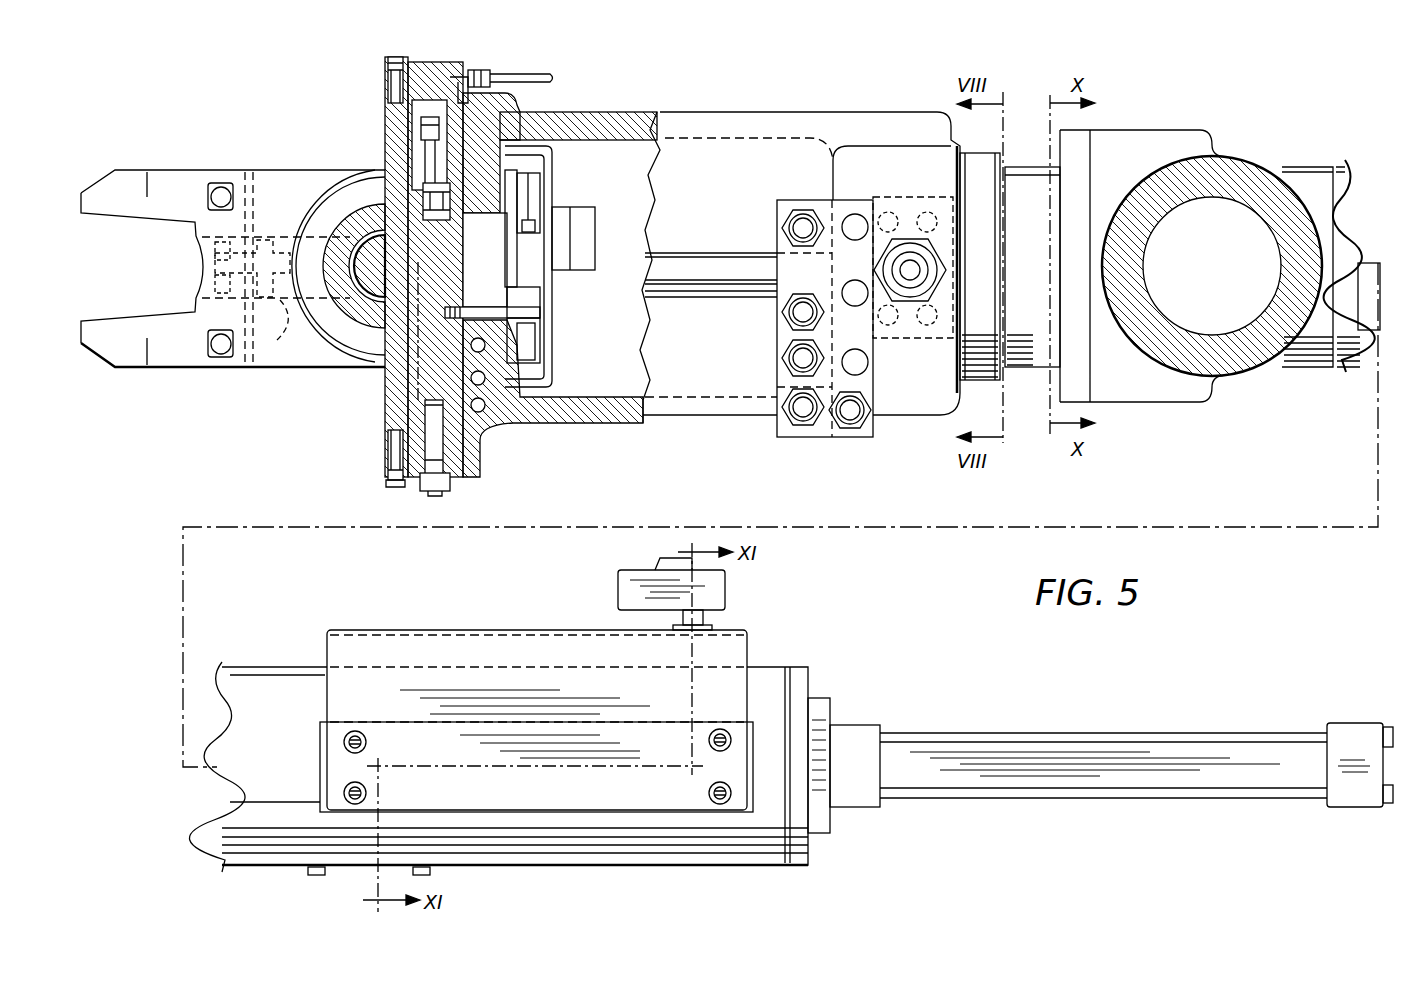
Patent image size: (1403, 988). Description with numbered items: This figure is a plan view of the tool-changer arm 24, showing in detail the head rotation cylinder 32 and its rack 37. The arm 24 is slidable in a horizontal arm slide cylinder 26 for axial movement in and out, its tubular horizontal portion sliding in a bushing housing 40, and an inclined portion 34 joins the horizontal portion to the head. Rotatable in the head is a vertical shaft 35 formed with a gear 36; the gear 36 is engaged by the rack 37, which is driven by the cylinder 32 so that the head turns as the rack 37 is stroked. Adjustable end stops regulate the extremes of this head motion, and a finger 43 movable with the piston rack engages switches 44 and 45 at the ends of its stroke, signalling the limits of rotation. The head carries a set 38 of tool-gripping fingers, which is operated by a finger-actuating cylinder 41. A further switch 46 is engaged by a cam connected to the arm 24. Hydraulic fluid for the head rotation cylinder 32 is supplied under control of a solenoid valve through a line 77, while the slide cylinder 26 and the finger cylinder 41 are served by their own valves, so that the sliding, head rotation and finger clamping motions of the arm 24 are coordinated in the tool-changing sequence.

The arm 24 is at (783, 127).
The cylinder 26 is at (993, 762).
The cylinder 32 is at (423, 153).
The inclined portion 34 is at (703, 413).
The vertical shaft 35 is at (380, 248).
The gear 36 is at (428, 244).
The rack 37 is at (420, 386).
The set of fingers 38 is at (119, 180).
The bushing housing 40 is at (733, 843).
The cylinder 41 is at (284, 328).
The finger 43 is at (490, 308).
The switch 44 is at (532, 183).
The switch 45 is at (528, 350).
The switch 46 is at (710, 592).
The line 77 is at (535, 73).